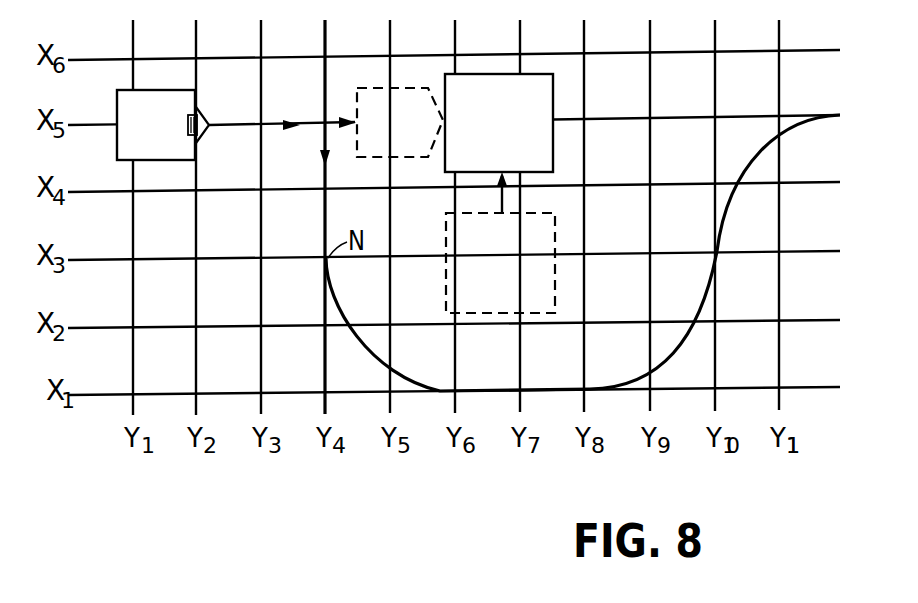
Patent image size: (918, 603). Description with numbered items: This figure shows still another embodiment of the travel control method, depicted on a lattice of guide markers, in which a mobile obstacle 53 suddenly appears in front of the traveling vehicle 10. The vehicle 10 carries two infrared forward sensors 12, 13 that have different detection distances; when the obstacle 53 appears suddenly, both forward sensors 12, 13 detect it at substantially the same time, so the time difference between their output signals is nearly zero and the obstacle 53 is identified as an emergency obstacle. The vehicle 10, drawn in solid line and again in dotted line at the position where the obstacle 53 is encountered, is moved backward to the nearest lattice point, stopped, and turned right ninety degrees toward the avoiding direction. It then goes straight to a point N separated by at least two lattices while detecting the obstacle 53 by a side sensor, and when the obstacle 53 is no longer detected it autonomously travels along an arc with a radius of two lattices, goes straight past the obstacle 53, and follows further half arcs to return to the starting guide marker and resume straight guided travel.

The vehicle 10 is at (148, 90).
The infrared forward sensor 12 is at (192, 114).
The infrared forward sensor 13 is at (201, 136).
The mobile obstacle 53 is at (536, 74).